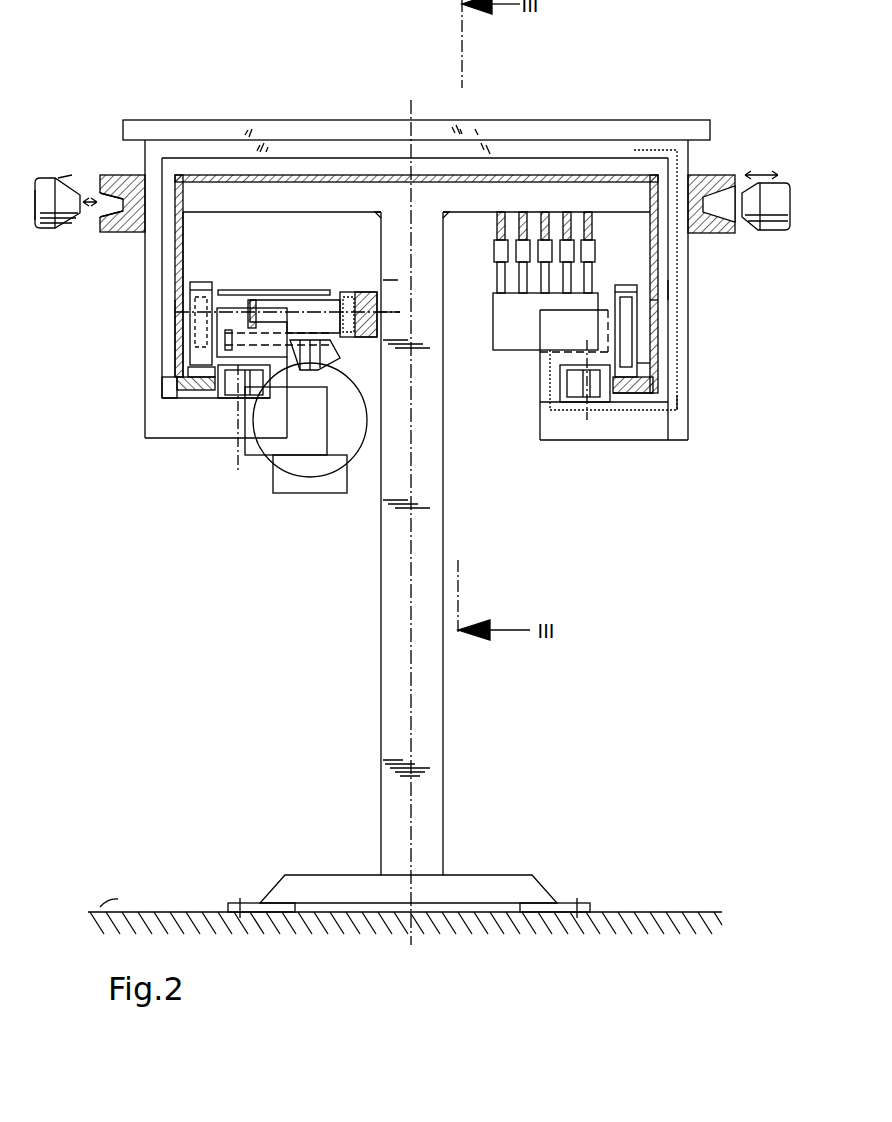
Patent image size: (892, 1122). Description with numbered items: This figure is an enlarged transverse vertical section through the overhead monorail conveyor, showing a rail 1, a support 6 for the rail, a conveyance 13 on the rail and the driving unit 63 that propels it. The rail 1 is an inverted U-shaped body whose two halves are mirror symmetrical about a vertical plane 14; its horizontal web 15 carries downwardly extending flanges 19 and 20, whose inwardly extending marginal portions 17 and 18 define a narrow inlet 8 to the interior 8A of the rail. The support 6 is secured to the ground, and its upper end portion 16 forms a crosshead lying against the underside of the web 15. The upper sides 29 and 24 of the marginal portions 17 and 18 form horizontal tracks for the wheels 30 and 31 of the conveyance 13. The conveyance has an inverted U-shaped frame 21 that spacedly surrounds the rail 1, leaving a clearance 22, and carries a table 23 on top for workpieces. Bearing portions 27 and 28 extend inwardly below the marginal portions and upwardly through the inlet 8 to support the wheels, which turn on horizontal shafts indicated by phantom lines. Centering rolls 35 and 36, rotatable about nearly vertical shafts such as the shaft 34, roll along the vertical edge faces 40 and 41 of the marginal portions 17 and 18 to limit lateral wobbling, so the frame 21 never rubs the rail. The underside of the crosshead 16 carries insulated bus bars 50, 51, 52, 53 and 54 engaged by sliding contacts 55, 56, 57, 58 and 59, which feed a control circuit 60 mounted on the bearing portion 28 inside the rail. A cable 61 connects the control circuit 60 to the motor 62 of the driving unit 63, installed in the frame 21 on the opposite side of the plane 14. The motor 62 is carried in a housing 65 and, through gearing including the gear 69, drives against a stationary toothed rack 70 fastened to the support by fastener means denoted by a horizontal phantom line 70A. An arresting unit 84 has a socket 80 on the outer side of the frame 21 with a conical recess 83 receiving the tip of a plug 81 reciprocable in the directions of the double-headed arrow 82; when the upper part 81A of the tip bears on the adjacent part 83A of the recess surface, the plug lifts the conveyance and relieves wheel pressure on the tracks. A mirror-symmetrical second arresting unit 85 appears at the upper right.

The rail 1 is at (298, 180).
The support 6 is at (443, 672).
The inlet 8 is at (504, 462).
The interior of the rail 8A is at (485, 366).
The conveyance 13 is at (670, 120).
The vertical plane 14 is at (411, 108).
The web 15 is at (282, 198).
The crosshead 16 is at (279, 213).
The marginal portion 17 is at (180, 385).
The marginal portion 18 is at (636, 394).
The flange 19 is at (175, 302).
The flange 20 is at (622, 348).
The frame 21 is at (668, 290).
The clearance 22 is at (166, 350).
The table 23 is at (139, 122).
The track 24 is at (646, 402).
The bearing portion 27 is at (236, 308).
The bearing portion 28 is at (548, 360).
The track 29 is at (205, 398).
The wheel 30 is at (203, 282).
The wheel 31 is at (638, 362).
The vertical shaft 34 is at (250, 400).
The centering roll 35 is at (262, 398).
The centering roll 36 is at (570, 388).
The vertical edge face 40 is at (238, 398).
The vertical edge face 41 is at (602, 402).
The bus bar 50 is at (501, 214).
The bus bar 51 is at (523, 214).
The bus bar 52 is at (545, 214).
The bus bar 53 is at (574, 212).
The bus bar 54 is at (595, 228).
The sliding contact 55 is at (496, 248).
The sliding contact 56 is at (521, 252).
The sliding contact 57 is at (545, 258).
The sliding contact 58 is at (568, 258).
The sliding contact 59 is at (592, 252).
The control circuit 60 is at (510, 316).
The cable 61 is at (679, 396).
The motor 62 is at (358, 426).
The driving unit 63 is at (278, 285).
The housing 65 is at (300, 450).
The gear 69 is at (330, 300).
The toothed rack 70 is at (360, 292).
The phantom line 70A is at (392, 305).
The socket 80 is at (128, 232).
The plug 81 is at (63, 229).
The upper part of conical tip surface 81A is at (65, 180).
The double-headed arrow 82 is at (95, 190).
The conical recess 83 is at (98, 222).
The adjacent part of recess surface 83A is at (120, 195).
The arresting unit 84 is at (74, 160).
The second arresting unit 85 is at (755, 158).